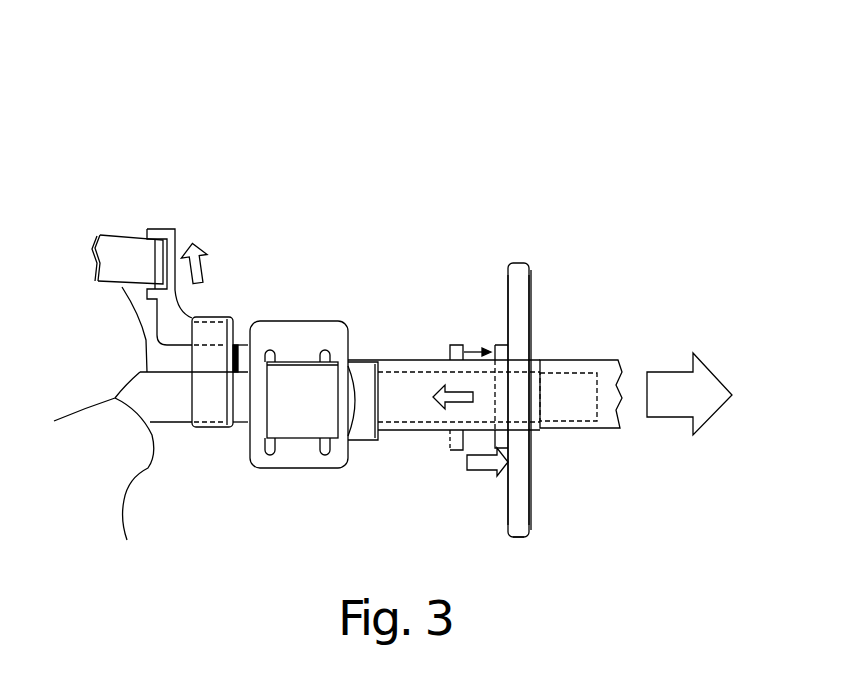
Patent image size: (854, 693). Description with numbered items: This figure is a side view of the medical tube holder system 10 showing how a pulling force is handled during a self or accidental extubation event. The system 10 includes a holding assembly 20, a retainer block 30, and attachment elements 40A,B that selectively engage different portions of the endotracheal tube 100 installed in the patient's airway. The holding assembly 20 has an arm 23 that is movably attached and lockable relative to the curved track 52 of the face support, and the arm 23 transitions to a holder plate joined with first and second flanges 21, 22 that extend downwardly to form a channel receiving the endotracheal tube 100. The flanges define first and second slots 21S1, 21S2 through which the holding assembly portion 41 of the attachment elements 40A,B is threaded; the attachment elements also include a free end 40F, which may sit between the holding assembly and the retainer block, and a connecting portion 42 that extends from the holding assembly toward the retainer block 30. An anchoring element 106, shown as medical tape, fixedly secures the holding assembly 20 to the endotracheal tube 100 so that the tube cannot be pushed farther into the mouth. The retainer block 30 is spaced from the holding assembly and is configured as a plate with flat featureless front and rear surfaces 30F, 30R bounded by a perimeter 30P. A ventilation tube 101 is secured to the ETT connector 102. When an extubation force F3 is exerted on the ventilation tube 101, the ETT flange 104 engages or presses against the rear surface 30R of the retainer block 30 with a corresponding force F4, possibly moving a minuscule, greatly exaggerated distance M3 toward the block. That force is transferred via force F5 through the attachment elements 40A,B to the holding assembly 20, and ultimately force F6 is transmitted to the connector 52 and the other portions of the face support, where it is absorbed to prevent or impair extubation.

The medical tube holder system 10 is at (495, 127).
The holding assembly 20 is at (299, 289).
The first flange 21 is at (300, 465).
The first slot 21S1 is at (270, 452).
The second slot 21S2 is at (326, 452).
The second flange 22 is at (350, 452).
The arm 23 is at (160, 317).
The retainer block 30 is at (518, 263).
The rear surface 30R is at (508, 282).
The front surface 30F is at (530, 290).
The perimeter 30P is at (530, 505).
The free end 40F is at (392, 360).
The attachment elements 40A,B is at (420, 430).
The holding assembly portion 41 is at (305, 428).
The connecting portion 42 is at (400, 408).
The track 52 is at (128, 248).
The endotracheal tube 100 is at (168, 410).
The ventilation tube 101 is at (608, 360).
The ETT connector 102 is at (560, 370).
The ETT flange 104 is at (452, 347).
The anchoring element 106 is at (208, 363).
The movement distance M3 is at (472, 350).
The extubation force F3 is at (672, 382).
The force F4 is at (487, 468).
The force F5 is at (450, 395).
The force F6 is at (197, 267).